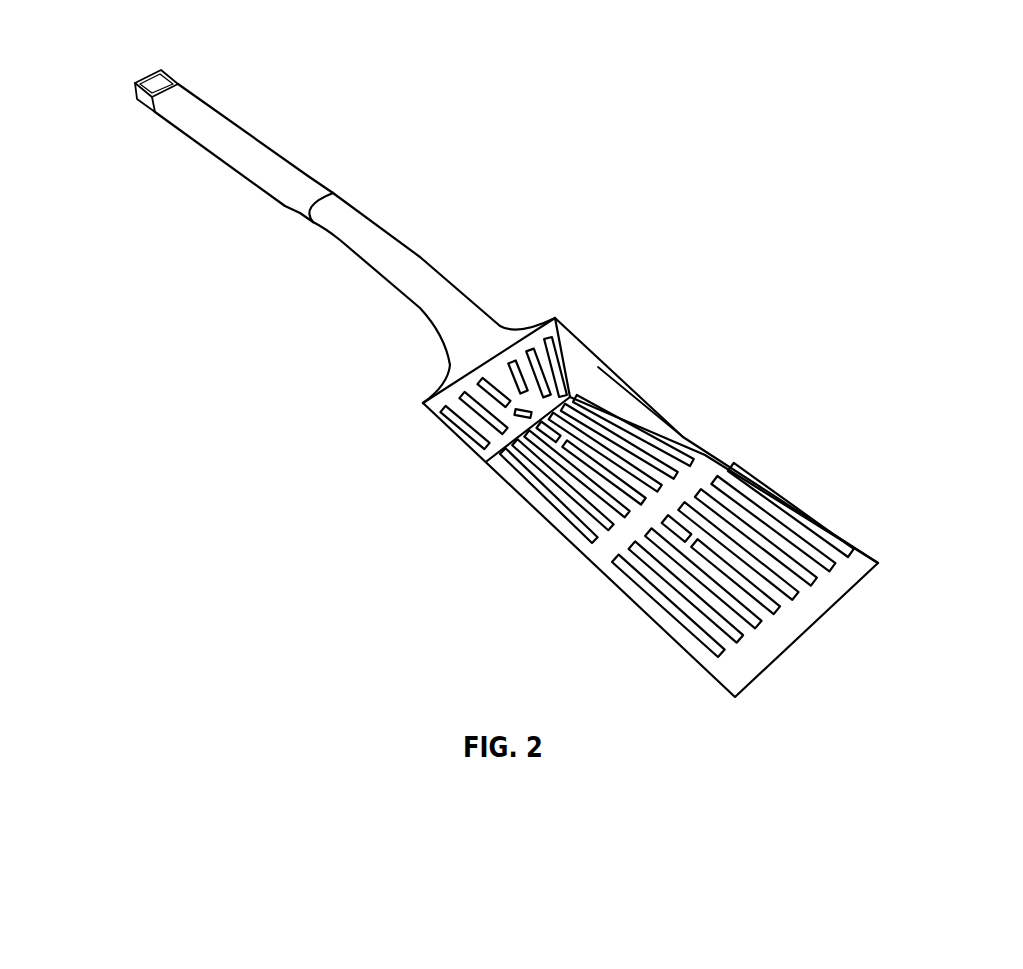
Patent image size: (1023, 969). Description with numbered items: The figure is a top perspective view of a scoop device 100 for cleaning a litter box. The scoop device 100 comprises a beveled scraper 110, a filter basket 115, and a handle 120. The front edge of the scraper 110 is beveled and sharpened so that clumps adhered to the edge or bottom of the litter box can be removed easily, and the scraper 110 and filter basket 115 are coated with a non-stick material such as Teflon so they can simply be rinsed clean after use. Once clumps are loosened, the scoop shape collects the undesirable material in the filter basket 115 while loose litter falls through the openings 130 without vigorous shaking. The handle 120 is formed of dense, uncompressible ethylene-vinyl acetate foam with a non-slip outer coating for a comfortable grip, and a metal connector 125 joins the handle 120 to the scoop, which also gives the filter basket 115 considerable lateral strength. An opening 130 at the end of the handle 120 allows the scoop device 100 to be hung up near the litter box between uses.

The scoop device 100 is at (806, 158).
The beveled scraper 110 is at (847, 596).
The filter basket 115 is at (570, 397).
The handle 120 is at (215, 130).
The metal connector 125 is at (380, 250).
The opening 130 is at (740, 498).